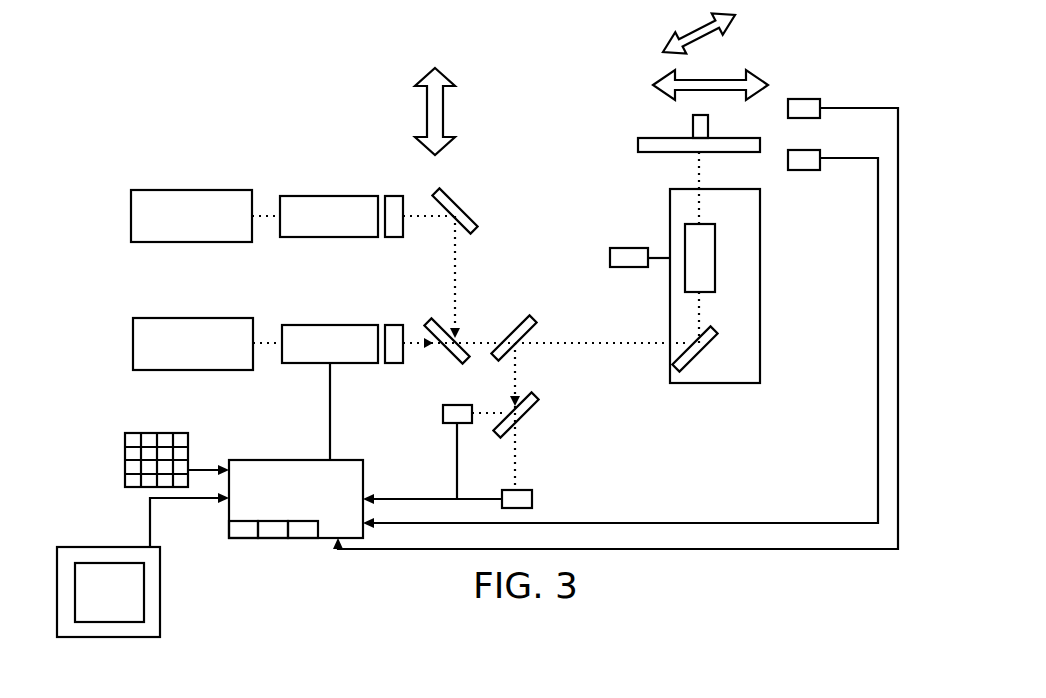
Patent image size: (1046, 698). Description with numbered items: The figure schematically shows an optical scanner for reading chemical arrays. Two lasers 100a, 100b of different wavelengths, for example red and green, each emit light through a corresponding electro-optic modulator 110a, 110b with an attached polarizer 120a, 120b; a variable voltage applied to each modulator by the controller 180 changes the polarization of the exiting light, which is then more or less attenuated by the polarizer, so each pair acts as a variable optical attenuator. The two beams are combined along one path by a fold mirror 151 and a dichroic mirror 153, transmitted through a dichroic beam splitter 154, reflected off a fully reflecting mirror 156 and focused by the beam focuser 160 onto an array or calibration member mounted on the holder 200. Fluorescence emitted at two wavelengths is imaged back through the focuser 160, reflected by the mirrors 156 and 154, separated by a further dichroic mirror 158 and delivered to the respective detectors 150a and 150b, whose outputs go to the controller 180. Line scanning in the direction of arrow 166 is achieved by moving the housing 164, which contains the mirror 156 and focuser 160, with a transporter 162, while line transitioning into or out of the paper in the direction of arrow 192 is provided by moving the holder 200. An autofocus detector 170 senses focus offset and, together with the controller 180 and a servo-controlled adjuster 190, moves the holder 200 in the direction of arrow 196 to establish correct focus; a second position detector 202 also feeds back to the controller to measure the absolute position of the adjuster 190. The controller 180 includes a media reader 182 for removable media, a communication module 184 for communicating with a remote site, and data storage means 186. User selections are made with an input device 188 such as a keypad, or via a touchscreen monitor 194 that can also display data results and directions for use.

The laser 100a is at (160, 318).
The laser 100b is at (164, 190).
The electro-optic modulator 110a is at (312, 325).
The electro-optic modulator 110b is at (318, 196).
The polarizer 120a is at (398, 325).
The polarizer 120b is at (396, 196).
The fold mirror 151 is at (467, 208).
The dichroic mirror 153 is at (467, 337).
The dichroic beam splitter 154 is at (523, 340).
The fully reflecting mirror 156 is at (694, 358).
The dichroic mirror 158 is at (527, 415).
The detector 150a is at (443, 410).
The detector 150b is at (533, 498).
The beam focuser 160 is at (715, 258).
The transporter 162 is at (610, 252).
The housing 164 is at (760, 292).
The line scan direction arrow 166 is at (715, 73).
The autofocus detector 170 is at (805, 170).
The controller 180 is at (272, 460).
The media reader 182 is at (235, 530).
The communication module 184 is at (273, 538).
The data storage means 186 is at (313, 538).
The input device 188 is at (135, 432).
The adjuster 190 is at (710, 122).
The line transition direction arrow 192 is at (674, 37).
The touchscreen monitor 194 is at (76, 552).
The focus direction arrow 196 is at (445, 95).
The holder 200 is at (638, 145).
The second position detector 202 is at (820, 118).